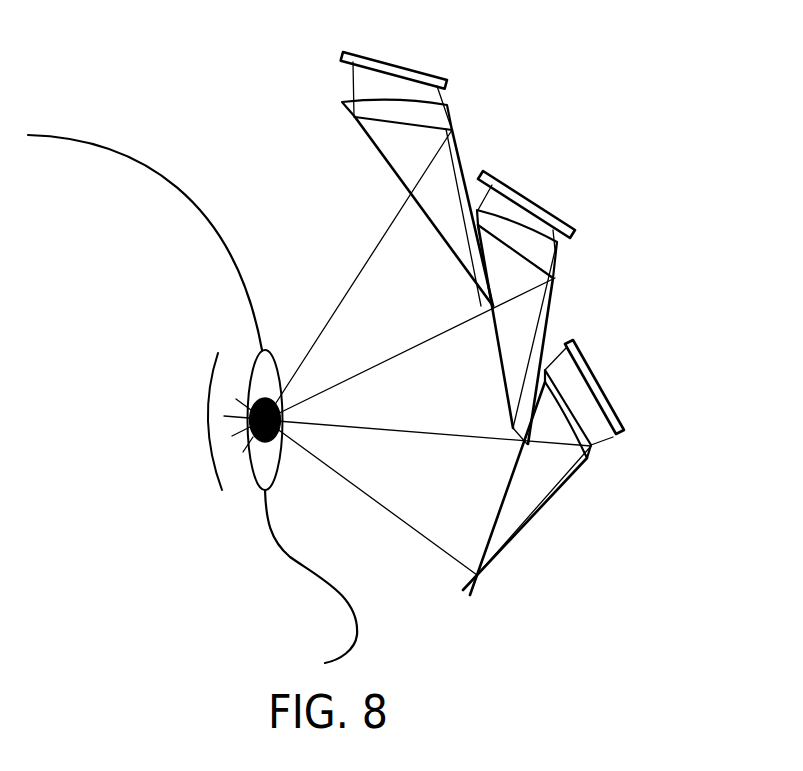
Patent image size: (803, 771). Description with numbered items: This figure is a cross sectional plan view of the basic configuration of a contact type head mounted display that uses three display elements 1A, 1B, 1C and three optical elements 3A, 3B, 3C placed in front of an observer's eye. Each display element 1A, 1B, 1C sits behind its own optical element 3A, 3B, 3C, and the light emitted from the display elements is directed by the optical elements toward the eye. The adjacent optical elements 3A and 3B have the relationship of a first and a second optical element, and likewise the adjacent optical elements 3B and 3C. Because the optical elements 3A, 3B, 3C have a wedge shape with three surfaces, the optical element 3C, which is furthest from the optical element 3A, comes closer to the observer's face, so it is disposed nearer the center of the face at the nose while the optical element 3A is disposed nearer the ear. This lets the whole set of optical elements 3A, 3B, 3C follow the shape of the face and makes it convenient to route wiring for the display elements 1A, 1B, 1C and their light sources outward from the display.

The display element 1A is at (402, 62).
The display element 1B is at (520, 190).
The display element 1C is at (588, 363).
The optical element 3A is at (397, 148).
The optical element 3B is at (503, 322).
The optical element 3C is at (528, 475).